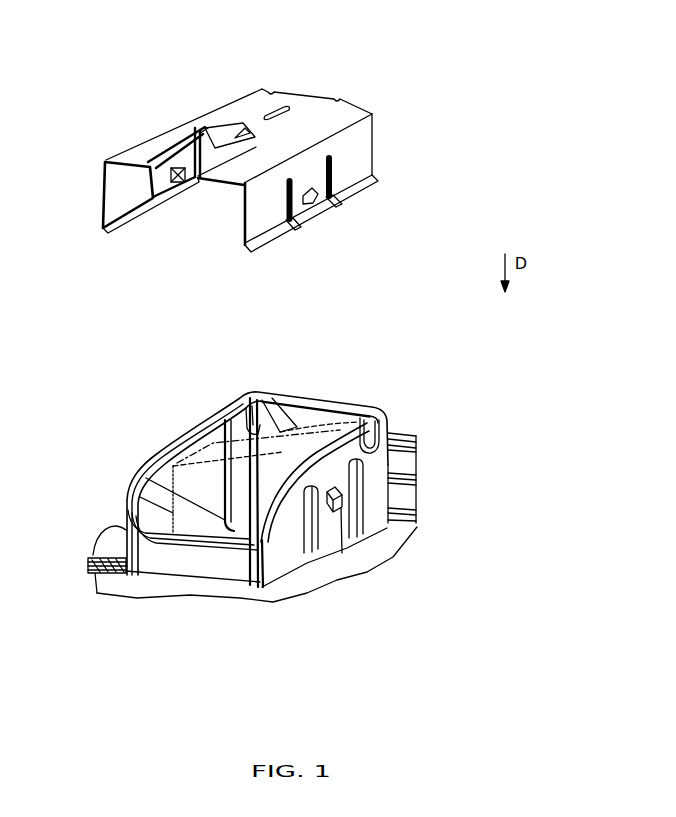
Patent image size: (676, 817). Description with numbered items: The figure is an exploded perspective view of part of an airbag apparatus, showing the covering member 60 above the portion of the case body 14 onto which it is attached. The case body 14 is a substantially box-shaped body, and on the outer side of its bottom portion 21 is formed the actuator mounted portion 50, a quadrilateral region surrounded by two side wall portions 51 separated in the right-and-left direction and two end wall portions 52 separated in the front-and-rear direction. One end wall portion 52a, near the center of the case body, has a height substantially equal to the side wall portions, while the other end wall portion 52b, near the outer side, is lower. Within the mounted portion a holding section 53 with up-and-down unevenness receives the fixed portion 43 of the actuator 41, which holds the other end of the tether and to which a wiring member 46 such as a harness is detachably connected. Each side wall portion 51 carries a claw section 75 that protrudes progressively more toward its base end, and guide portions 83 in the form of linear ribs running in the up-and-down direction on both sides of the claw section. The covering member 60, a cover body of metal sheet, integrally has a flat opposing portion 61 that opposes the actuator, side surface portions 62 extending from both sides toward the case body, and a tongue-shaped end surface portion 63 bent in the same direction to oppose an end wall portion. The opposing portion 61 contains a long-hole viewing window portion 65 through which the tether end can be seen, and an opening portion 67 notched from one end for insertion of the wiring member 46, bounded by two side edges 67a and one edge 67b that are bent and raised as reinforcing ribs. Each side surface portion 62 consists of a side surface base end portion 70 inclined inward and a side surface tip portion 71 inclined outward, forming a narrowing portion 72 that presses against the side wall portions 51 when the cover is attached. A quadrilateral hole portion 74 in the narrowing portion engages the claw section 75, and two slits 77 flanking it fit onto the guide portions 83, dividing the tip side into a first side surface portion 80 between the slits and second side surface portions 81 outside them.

The covering member 60 is at (240, 153).
The opposing portion 61 is at (330, 128).
The side surface portion 62 is at (115, 187).
The end surface portion 63 is at (283, 94).
The viewing window portion 65 is at (290, 110).
The opening portion 67 is at (213, 138).
The side edge 67a is at (196, 129).
The one edge 67b is at (219, 137).
The side surface base end portion 70 is at (243, 216).
The side surface tip portion 71 is at (378, 180).
The narrowing portion 72 is at (112, 232).
The hole portion 74 is at (314, 206).
The slit 77 is at (292, 224).
The first side surface portion 80 is at (333, 199).
The second side surface portion 81 is at (375, 116).
The case body 14 is at (246, 497).
The bottom portion 21 is at (268, 588).
The actuator 41 is at (180, 453).
The fixed portion 43 is at (390, 428).
The wiring member 46 is at (131, 500).
The actuator mounted portion 50 is at (350, 400).
The side wall portion 51 is at (141, 471).
The end wall portion 52 is at (262, 408).
The one end wall portion 52a is at (308, 412).
The other end wall portion 52b is at (100, 565).
The holding section 53 is at (247, 412).
The claw section 75 is at (351, 549).
The guide portion 83 is at (312, 557).